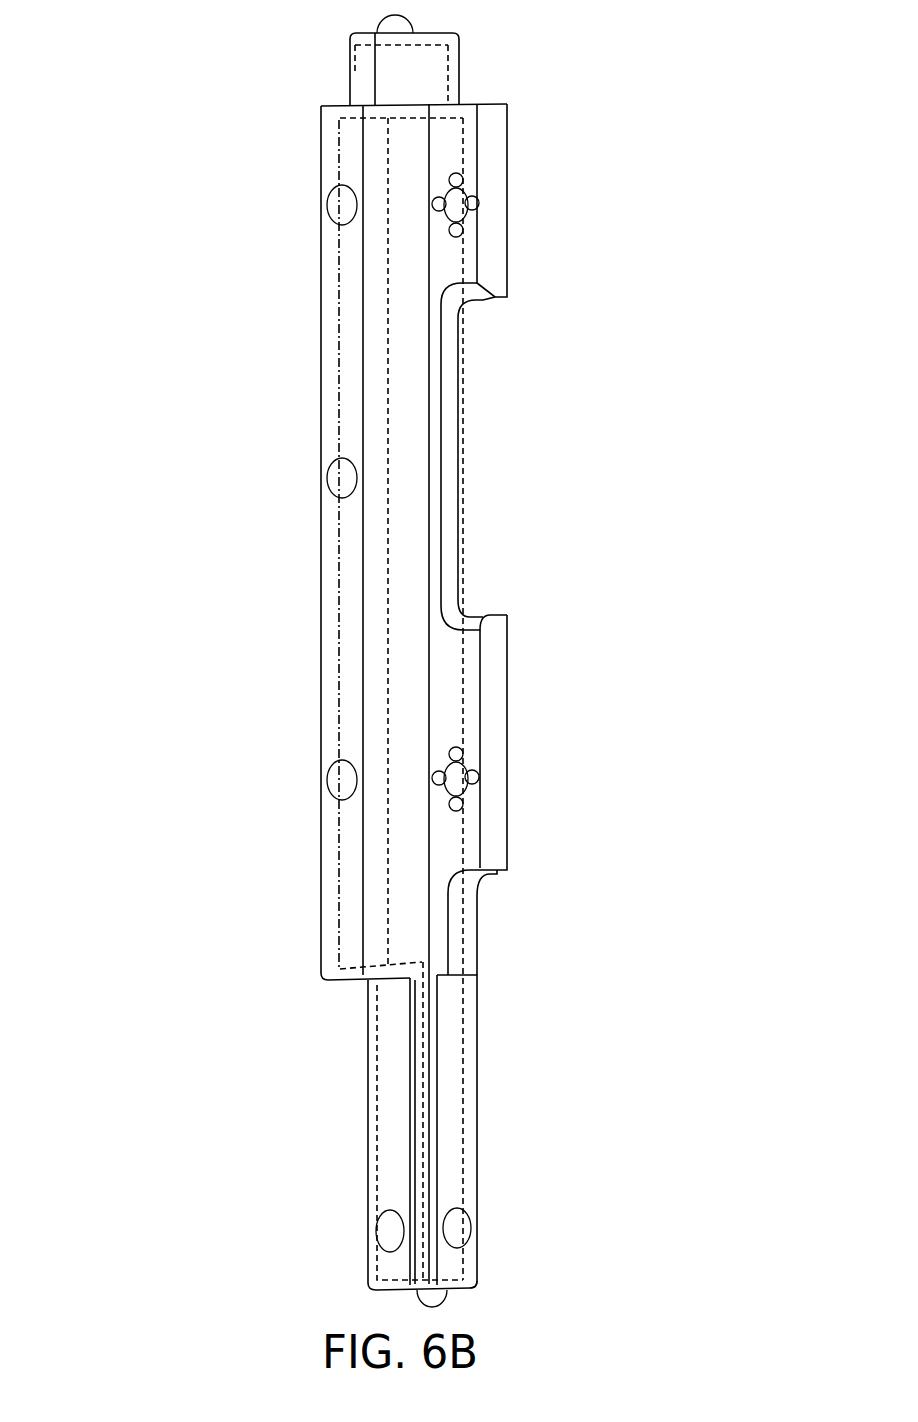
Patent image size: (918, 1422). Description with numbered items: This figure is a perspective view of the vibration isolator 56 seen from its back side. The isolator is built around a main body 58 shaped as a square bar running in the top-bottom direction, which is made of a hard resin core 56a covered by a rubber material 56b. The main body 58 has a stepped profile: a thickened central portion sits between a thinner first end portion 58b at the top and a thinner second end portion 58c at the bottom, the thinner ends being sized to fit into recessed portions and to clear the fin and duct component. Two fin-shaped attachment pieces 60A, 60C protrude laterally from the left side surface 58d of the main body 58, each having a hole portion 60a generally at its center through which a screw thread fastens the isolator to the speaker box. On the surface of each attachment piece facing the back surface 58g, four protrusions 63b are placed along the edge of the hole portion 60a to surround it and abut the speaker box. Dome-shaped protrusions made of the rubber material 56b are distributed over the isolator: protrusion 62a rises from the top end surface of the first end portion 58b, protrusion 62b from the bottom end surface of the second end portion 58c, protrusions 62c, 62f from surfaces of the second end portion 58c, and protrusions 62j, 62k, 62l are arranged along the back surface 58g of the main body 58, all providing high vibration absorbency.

The vibration isolator 56 is at (77, 46).
The core 56a is at (464, 387).
The rubber material 56b is at (414, 540).
The main body 58 is at (418, 651).
The first end portion 58b is at (431, 54).
The second end portion 58c is at (479, 1263).
The left side surface 58d is at (457, 1047).
The back surface 58g is at (392, 1047).
The attachment piece 60A is at (507, 127).
The attachment piece 60C is at (511, 675).
The hole portion 60a is at (469, 212).
The protrusion 62a is at (392, 25).
The protrusion 62b is at (433, 1300).
The protrusion 62c is at (461, 1228).
The protrusion 62f is at (386, 1231).
The protrusion 62j is at (336, 203).
The protrusion 62k is at (336, 477).
The protrusion 62l is at (336, 779).
The protrusions 63b is at (460, 189).